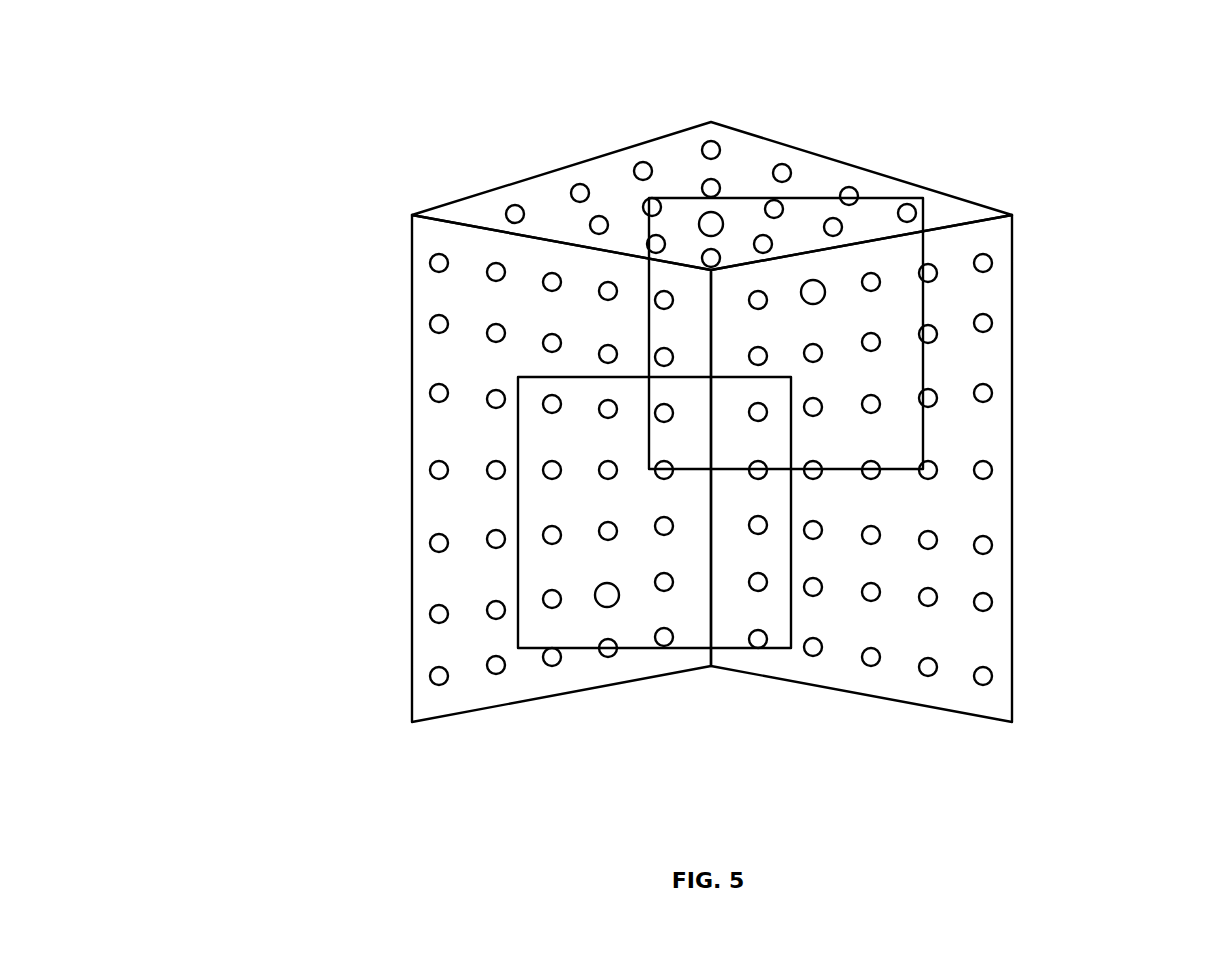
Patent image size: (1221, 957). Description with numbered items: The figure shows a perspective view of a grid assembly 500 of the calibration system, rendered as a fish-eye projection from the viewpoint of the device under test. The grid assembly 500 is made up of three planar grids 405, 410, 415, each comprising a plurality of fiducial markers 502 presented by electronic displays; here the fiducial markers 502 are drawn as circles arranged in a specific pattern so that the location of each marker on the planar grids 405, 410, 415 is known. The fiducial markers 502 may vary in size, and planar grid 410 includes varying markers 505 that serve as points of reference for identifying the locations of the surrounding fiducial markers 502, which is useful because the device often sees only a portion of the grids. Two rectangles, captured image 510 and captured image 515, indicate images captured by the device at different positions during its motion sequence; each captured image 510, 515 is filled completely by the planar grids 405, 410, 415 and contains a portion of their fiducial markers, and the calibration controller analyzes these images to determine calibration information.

The grid assembly 500 is at (669, 414).
The planar grid 415 is at (546, 172).
The planar grid 410 is at (410, 290).
The planar grid 405 is at (1014, 290).
The captured image 515 is at (880, 197).
The captured image 510 is at (691, 648).
The fiducial markers 502 is at (978, 387).
The varying markers 505 is at (603, 582).